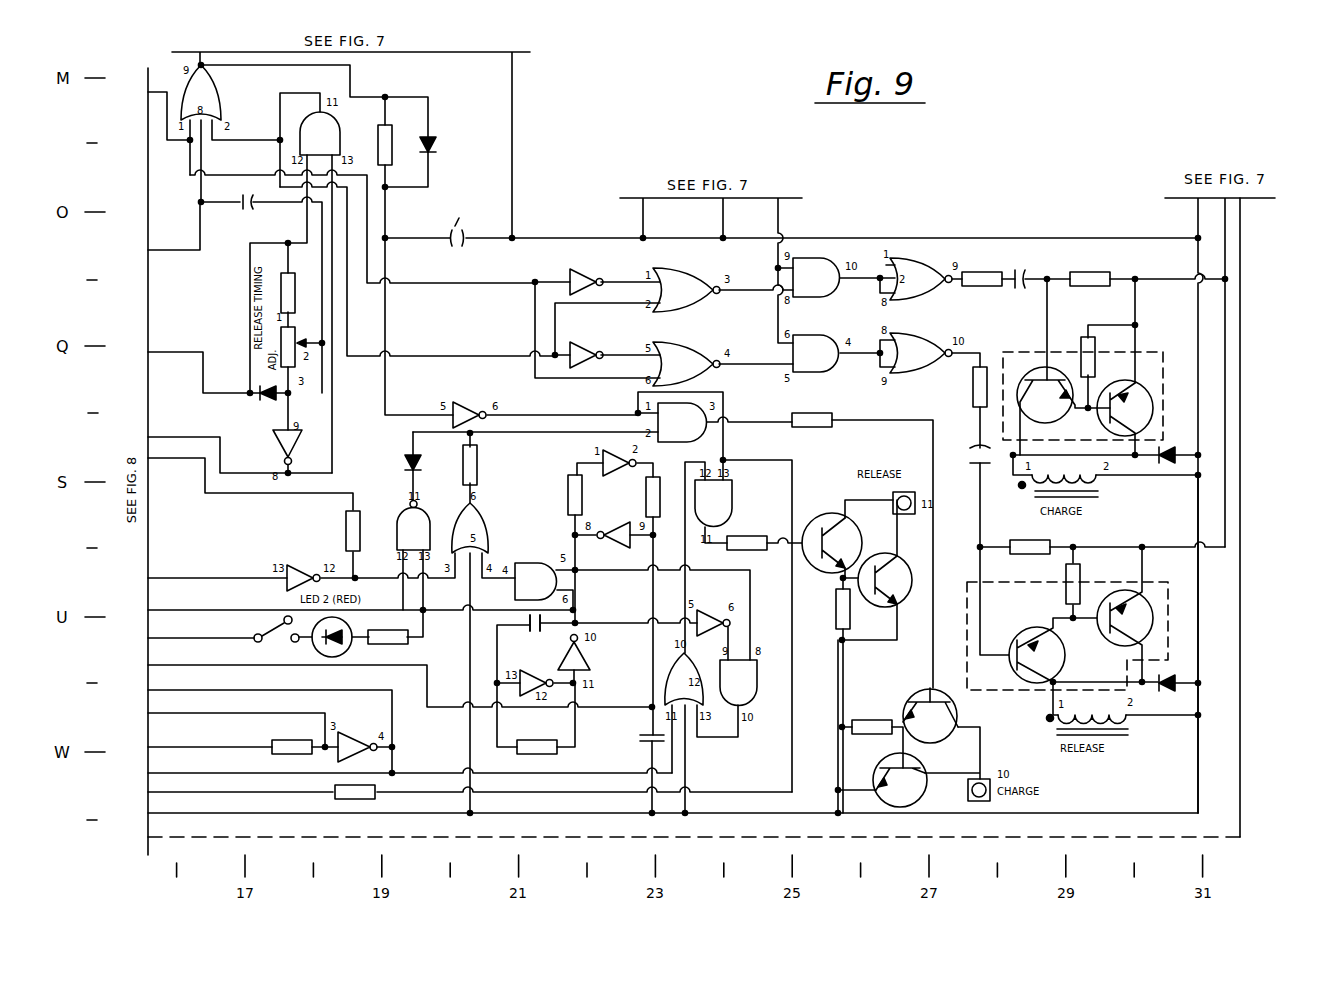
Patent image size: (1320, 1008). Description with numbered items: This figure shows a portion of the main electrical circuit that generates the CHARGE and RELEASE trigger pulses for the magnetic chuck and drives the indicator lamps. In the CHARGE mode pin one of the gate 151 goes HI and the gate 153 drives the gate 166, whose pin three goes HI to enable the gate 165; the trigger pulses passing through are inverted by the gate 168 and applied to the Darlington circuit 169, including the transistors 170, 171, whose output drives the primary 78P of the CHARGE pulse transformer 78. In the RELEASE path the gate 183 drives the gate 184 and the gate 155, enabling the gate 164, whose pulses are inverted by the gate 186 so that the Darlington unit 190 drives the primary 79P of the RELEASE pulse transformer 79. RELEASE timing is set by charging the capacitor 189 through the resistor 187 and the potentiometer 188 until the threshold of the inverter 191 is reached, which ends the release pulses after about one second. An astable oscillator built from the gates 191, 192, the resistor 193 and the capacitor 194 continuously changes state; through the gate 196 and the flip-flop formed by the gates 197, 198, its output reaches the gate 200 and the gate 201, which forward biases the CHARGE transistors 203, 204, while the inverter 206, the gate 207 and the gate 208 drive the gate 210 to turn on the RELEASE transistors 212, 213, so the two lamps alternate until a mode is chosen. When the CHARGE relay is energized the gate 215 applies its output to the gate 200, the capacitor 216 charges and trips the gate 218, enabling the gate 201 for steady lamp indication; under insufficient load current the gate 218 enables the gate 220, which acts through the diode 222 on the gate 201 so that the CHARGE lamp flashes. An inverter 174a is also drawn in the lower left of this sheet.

The gate 151 is at (215, 93).
The gate 183 is at (332, 130).
The capacitor 189 is at (240, 199).
The resistor 187 is at (284, 272).
The potentiometer 188 is at (300, 329).
The inverter 191 is at (284, 442).
The capacitor 216 is at (460, 233).
The gate 218 is at (476, 402).
The gate 153 is at (568, 275).
The gate 184 is at (582, 348).
The gate 166 is at (688, 276).
The gate 155 is at (685, 354).
The gate 165 is at (824, 298).
The gate 164 is at (825, 371).
The gate 168 is at (925, 266).
The gate 186 is at (925, 341).
The transistor 170 is at (1032, 368).
The Darlington circuit 169 is at (1152, 346).
The transistor 171 is at (1142, 401).
The pulse transformer 78 is at (1110, 481).
The primary of pulse transformer 78P is at (1021, 489).
The pulse transformer 79 is at (1135, 723).
The primary of pulse transformer 79P is at (1054, 722).
The Darlington unit 190 is at (1168, 636).
The gate 201 is at (724, 437).
The gate 210 is at (733, 500).
The RELEASE transistor 212 is at (829, 514).
The RELEASE transistor 213 is at (895, 564).
The CHARGE transistor 203 is at (908, 703).
The CHARGE transistor 204 is at (924, 777).
The diode 222 is at (405, 463).
The gate 220 is at (428, 516).
The gate 200 is at (487, 530).
The gate 196 is at (538, 563).
The gate 197 is at (598, 461).
The gate 198 is at (619, 526).
The gate 215 is at (297, 565).
The capacitor 194 is at (528, 617).
The gate 192 is at (530, 670).
The gate 208 is at (665, 687).
The inverter gate 206 is at (714, 609).
The gate 207 is at (756, 682).
The resistor 193 is at (538, 753).
The inverter 174a is at (365, 715).